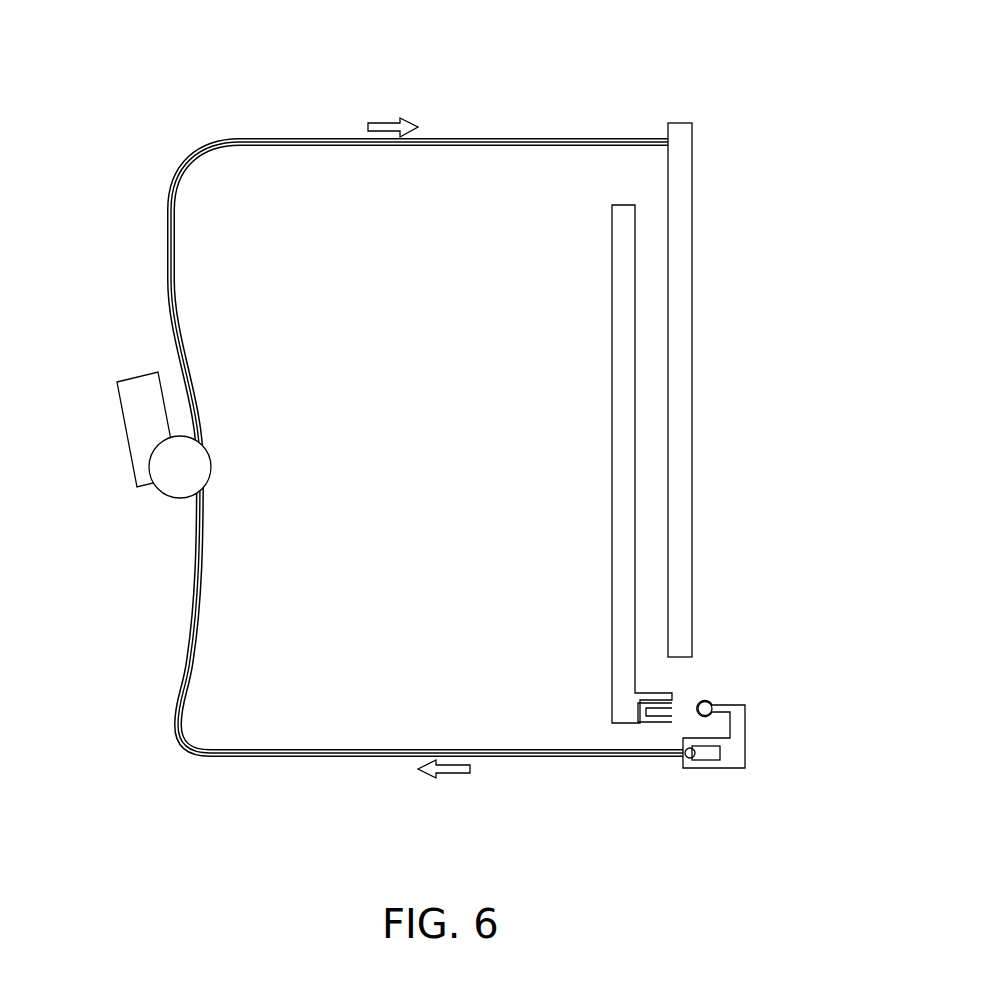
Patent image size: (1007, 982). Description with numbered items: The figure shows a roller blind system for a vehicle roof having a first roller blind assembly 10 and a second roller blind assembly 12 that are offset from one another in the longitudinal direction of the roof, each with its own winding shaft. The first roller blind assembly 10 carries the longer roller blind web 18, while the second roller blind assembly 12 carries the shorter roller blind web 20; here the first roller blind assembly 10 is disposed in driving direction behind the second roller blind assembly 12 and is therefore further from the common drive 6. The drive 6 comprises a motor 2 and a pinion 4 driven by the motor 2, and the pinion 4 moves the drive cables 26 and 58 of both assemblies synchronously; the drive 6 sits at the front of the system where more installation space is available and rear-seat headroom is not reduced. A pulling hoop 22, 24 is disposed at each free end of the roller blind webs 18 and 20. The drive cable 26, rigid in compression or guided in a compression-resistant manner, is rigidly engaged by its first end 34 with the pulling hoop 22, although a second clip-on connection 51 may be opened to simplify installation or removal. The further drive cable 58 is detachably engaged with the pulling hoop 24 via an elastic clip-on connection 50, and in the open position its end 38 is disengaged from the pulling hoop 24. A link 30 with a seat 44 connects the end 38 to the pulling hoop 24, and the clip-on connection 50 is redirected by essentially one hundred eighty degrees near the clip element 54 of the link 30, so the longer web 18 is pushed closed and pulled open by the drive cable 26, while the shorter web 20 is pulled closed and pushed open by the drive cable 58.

The first roller blind assembly 10 is at (448, 441).
The second roller blind assembly 12 is at (299, 112).
The roller blind web 18 is at (820, 473).
The roller blind web 20 is at (405, 473).
The pulling hoop 22 is at (684, 370).
The pulling hoop 24 is at (617, 388).
The drive cable 26 is at (238, 140).
The link 30 is at (734, 769).
The first end 34 is at (643, 138).
The end 38 is at (667, 758).
The seat 44 is at (630, 719).
The clip-on connection 50 is at (690, 703).
The second clip-on connection 51 is at (707, 762).
The clip element 54 is at (714, 705).
The drive cable 58 is at (290, 755).
The motor 2 is at (128, 417).
The pinion 4 is at (182, 484).
The drive 6 is at (138, 478).